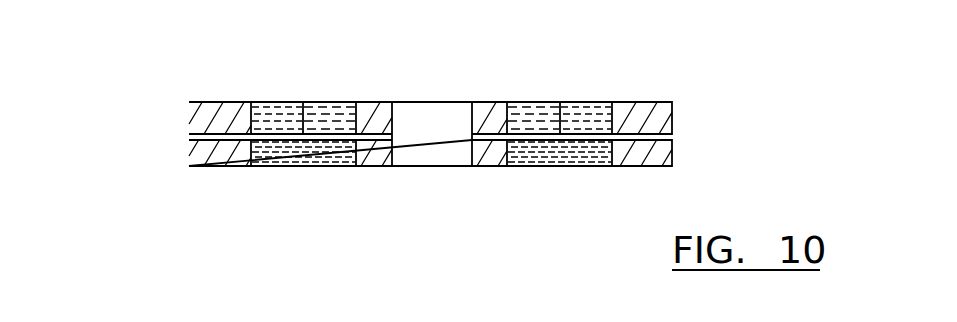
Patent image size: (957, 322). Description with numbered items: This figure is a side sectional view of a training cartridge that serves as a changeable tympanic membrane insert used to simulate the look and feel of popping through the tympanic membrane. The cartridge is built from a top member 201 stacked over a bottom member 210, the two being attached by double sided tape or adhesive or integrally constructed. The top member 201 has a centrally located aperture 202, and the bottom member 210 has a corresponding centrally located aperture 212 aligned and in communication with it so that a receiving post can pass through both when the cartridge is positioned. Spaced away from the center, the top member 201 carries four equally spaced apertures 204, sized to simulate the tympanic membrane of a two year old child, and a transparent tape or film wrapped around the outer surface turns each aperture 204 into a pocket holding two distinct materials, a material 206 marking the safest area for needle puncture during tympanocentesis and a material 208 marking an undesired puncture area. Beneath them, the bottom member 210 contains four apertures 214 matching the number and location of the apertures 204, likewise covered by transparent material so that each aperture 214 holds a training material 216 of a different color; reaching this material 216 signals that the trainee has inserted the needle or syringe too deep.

The top member 201 is at (189, 108).
The aperture 202 is at (417, 104).
The apertures 204 is at (303, 106).
The training material 206 is at (343, 104).
The training material 208 is at (280, 102).
The bottom member 210 is at (188, 153).
The aperture 212 is at (423, 160).
The apertures 214 is at (354, 167).
The training material 216 is at (282, 155).